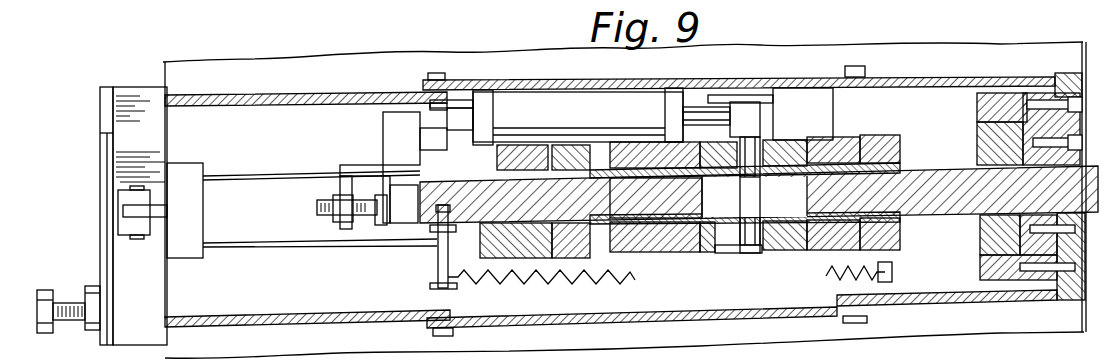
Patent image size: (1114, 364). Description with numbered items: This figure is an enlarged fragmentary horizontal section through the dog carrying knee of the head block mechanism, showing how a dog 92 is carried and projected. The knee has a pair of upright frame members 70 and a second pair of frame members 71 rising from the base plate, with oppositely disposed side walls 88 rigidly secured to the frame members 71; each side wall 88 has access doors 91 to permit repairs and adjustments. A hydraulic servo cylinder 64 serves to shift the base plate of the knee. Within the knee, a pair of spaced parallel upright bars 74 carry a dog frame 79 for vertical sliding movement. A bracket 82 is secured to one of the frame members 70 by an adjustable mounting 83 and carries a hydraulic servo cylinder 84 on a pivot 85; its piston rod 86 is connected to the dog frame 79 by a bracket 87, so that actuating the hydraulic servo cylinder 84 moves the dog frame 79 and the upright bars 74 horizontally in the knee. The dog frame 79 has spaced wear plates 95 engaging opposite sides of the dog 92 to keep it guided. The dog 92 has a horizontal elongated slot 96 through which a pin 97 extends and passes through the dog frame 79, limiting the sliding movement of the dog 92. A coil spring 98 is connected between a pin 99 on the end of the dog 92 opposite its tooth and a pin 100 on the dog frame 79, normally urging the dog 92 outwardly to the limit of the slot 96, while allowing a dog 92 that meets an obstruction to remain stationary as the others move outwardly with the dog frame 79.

The hydraulic servo cylinder 64 is at (238, 188).
The upright frame members 70 is at (517, 152).
The frame members 71 is at (1082, 120).
The upright bars 74 is at (807, 143).
The dog frame 79 is at (663, 251).
The bracket 82 is at (392, 148).
The adjustable mounting 83 is at (367, 205).
The hydraulic servo cylinder 84 is at (515, 102).
The pivot 85 is at (425, 148).
The piston rod 86 is at (705, 92).
The bracket 87 is at (785, 93).
The side walls 88 is at (279, 95).
The access doors 91 is at (763, 88).
The dog 92 is at (913, 174).
The wear plates 95 is at (840, 160).
The elongated slot 96 is at (698, 196).
The pin 97 is at (758, 196).
The coil spring 98 is at (586, 279).
The pin 99 is at (438, 273).
The pin 100 is at (872, 272).